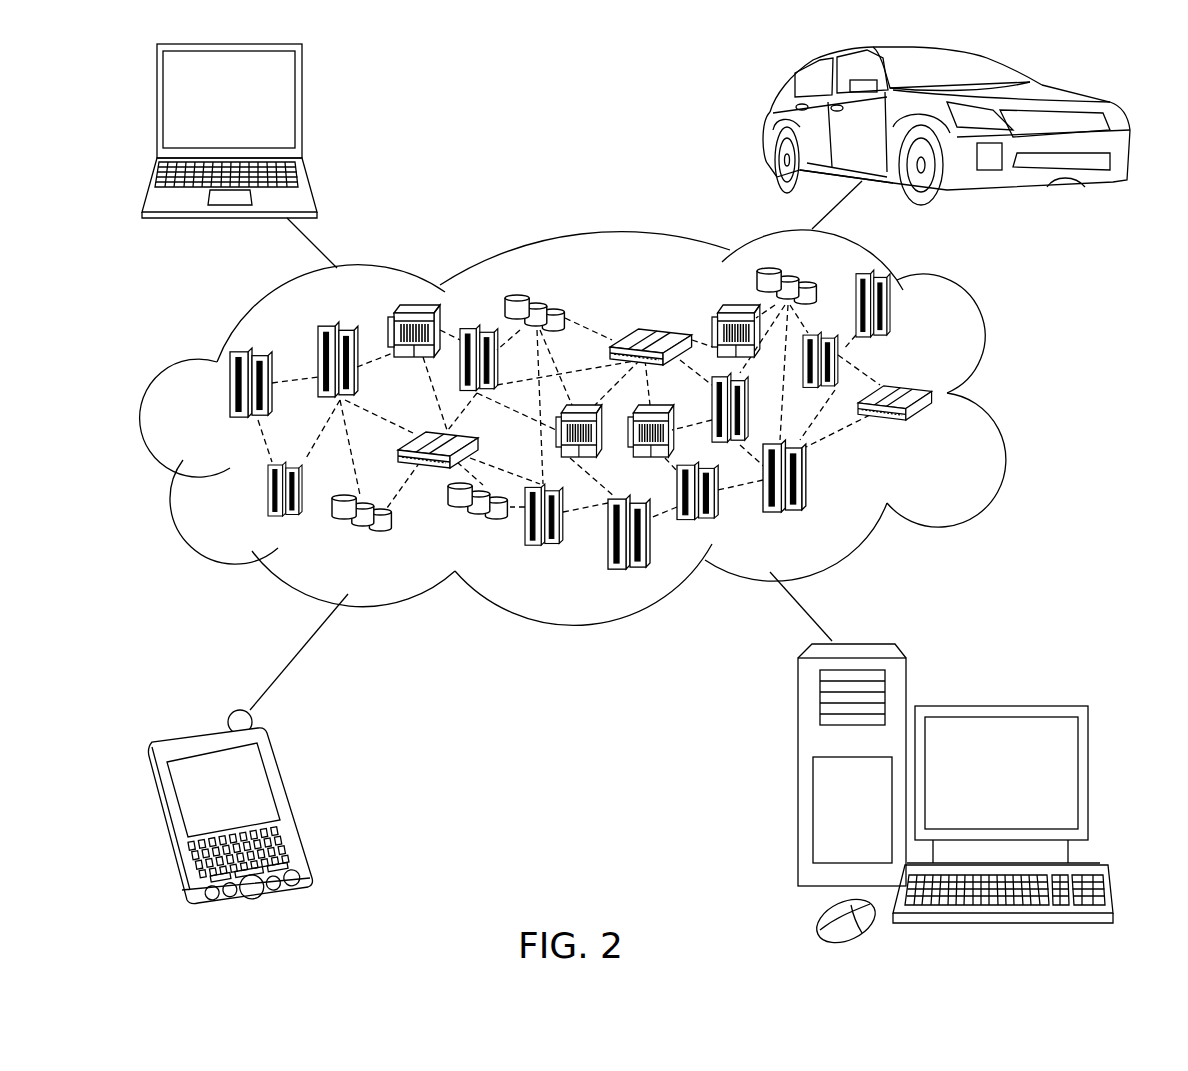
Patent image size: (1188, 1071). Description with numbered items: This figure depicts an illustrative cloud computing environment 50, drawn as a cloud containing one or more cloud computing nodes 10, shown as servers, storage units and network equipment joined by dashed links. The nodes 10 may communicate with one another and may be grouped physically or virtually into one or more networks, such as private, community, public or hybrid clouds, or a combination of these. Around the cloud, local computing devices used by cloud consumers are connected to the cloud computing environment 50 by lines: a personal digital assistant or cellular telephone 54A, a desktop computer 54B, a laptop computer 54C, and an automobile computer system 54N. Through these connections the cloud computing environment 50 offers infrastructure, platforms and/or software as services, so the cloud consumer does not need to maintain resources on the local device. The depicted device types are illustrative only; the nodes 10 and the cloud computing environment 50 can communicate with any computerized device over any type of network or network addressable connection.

The cloud computing nodes 10 is at (945, 434).
The cloud computing environment 50 is at (1000, 395).
The personal digital assistant (PDA) or cellular telephone 54A is at (292, 805).
The desktop computer 54B is at (998, 705).
The laptop computer 54C is at (302, 108).
The automobile computer system 54N is at (770, 128).